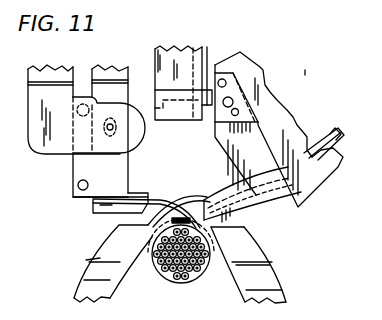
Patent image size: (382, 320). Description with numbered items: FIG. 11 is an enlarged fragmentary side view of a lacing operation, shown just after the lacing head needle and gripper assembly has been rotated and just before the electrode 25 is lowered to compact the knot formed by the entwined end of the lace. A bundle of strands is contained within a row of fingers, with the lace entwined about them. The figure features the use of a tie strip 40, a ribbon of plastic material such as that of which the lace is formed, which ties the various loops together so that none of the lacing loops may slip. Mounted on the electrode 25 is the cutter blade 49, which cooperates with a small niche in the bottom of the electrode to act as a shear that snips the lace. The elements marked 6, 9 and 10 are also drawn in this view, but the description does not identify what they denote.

The band 6 is at (88, 262).
The curved strap 9 is at (273, 203).
The bracket 10 is at (97, 214).
The electrode 25 is at (180, 53).
The tie strip 40 is at (173, 214).
The cutter blade 49 is at (210, 48).